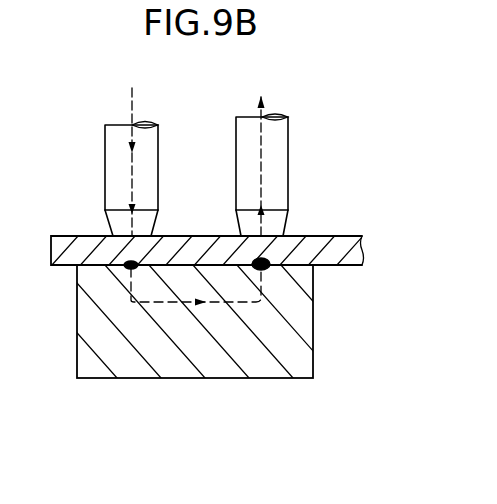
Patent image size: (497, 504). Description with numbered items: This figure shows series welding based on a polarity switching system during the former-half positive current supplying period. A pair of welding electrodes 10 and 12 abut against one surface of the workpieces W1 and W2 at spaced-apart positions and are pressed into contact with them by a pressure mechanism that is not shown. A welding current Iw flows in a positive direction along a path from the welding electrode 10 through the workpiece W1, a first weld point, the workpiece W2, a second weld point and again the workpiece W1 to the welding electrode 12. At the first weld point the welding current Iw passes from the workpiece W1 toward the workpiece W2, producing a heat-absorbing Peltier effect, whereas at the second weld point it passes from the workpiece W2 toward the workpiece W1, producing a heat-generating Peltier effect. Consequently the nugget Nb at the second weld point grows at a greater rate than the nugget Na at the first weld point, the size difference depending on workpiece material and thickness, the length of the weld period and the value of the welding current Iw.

The welding electrode 10 is at (107, 167).
The welding electrode 12 is at (289, 158).
The workpiece W1 is at (325, 234).
The workpiece W2 is at (205, 358).
The nugget Na is at (129, 266).
The nugget Nb is at (267, 268).
The welding current Iw is at (216, 151).